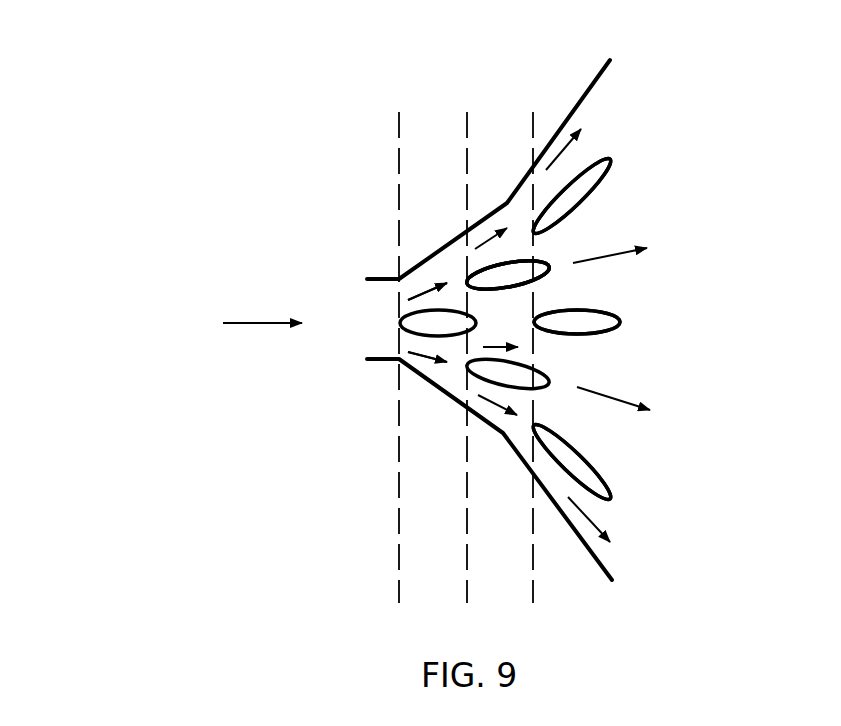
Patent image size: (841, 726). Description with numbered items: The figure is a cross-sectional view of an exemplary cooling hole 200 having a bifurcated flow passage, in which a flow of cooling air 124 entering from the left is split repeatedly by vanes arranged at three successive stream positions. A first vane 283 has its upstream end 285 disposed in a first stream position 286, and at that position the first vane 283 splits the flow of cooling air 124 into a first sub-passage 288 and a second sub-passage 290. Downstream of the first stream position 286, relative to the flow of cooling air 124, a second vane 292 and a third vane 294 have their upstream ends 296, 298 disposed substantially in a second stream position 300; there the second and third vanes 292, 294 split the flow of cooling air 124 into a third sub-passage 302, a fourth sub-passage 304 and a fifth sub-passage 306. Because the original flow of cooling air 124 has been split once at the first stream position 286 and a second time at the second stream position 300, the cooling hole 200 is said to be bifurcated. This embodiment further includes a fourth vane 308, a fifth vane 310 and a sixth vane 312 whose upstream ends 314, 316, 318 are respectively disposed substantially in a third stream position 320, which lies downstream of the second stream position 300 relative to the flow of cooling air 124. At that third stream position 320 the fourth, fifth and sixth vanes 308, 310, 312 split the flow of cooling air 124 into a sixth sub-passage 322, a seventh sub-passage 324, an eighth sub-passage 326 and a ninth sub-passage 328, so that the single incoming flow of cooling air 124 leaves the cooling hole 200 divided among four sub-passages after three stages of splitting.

The cooling hole 200 is at (418, 67).
The cooling air 124 is at (265, 322).
The first vane 283 is at (410, 303).
The upstream end of first vane 285 is at (400, 323).
The first stream position 286 is at (397, 588).
The first sub-passage 288 is at (422, 277).
The second sub-passage 290 is at (428, 363).
The second vane 292 is at (523, 257).
The third vane 294 is at (540, 393).
The upstream end of second vane 296 is at (468, 273).
The upstream end of third vane 298 is at (458, 370).
The second stream position 300 is at (465, 590).
The third sub-passage 302 is at (485, 235).
The fourth sub-passage 304 is at (502, 347).
The fifth sub-passage 306 is at (490, 412).
The fourth vane 308 is at (602, 155).
The fifth vane 310 is at (610, 310).
The sixth vane 312 is at (583, 460).
The upstream end of fourth vane 314 is at (538, 230).
The upstream end of fifth vane 316 is at (540, 323).
The upstream end of sixth vane 318 is at (543, 430).
The third stream position 320 is at (535, 588).
The sixth sub-passage 322 is at (560, 145).
The seventh sub-passage 324 is at (620, 248).
The eighth sub-passage 326 is at (613, 393).
The ninth sub-passage 328 is at (573, 512).